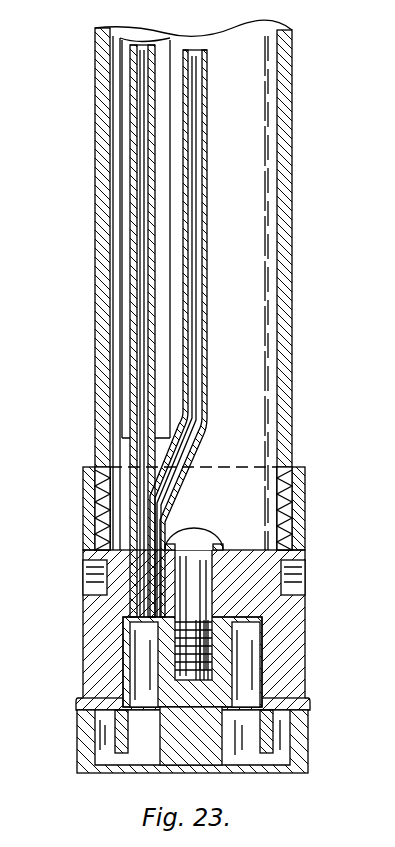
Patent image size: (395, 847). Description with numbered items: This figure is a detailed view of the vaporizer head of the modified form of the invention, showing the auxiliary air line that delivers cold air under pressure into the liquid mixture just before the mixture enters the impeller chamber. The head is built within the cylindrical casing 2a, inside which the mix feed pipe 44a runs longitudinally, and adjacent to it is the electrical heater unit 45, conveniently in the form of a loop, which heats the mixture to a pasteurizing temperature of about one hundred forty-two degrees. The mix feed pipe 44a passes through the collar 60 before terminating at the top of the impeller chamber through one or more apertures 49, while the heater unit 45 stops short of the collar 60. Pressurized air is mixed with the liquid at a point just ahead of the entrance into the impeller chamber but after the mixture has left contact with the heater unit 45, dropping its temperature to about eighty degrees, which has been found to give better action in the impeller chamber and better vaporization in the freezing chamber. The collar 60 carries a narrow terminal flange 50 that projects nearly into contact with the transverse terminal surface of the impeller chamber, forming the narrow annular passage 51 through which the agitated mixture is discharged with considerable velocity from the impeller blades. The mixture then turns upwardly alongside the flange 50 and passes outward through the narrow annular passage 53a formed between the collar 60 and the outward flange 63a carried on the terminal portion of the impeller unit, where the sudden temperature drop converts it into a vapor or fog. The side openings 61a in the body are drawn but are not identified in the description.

The cylindrical casing 2a is at (293, 150).
The electrical heater unit 45 is at (130, 58).
The mix feed pipe 44a is at (140, 148).
The collar 60 is at (304, 502).
The body with side openings 61a is at (305, 580).
The apertures 49 is at (128, 632).
The annular passage 53a is at (80, 706).
The terminal flange 50 is at (274, 745).
The annular passage 51 is at (262, 760).
The outward flange 63a is at (152, 770).